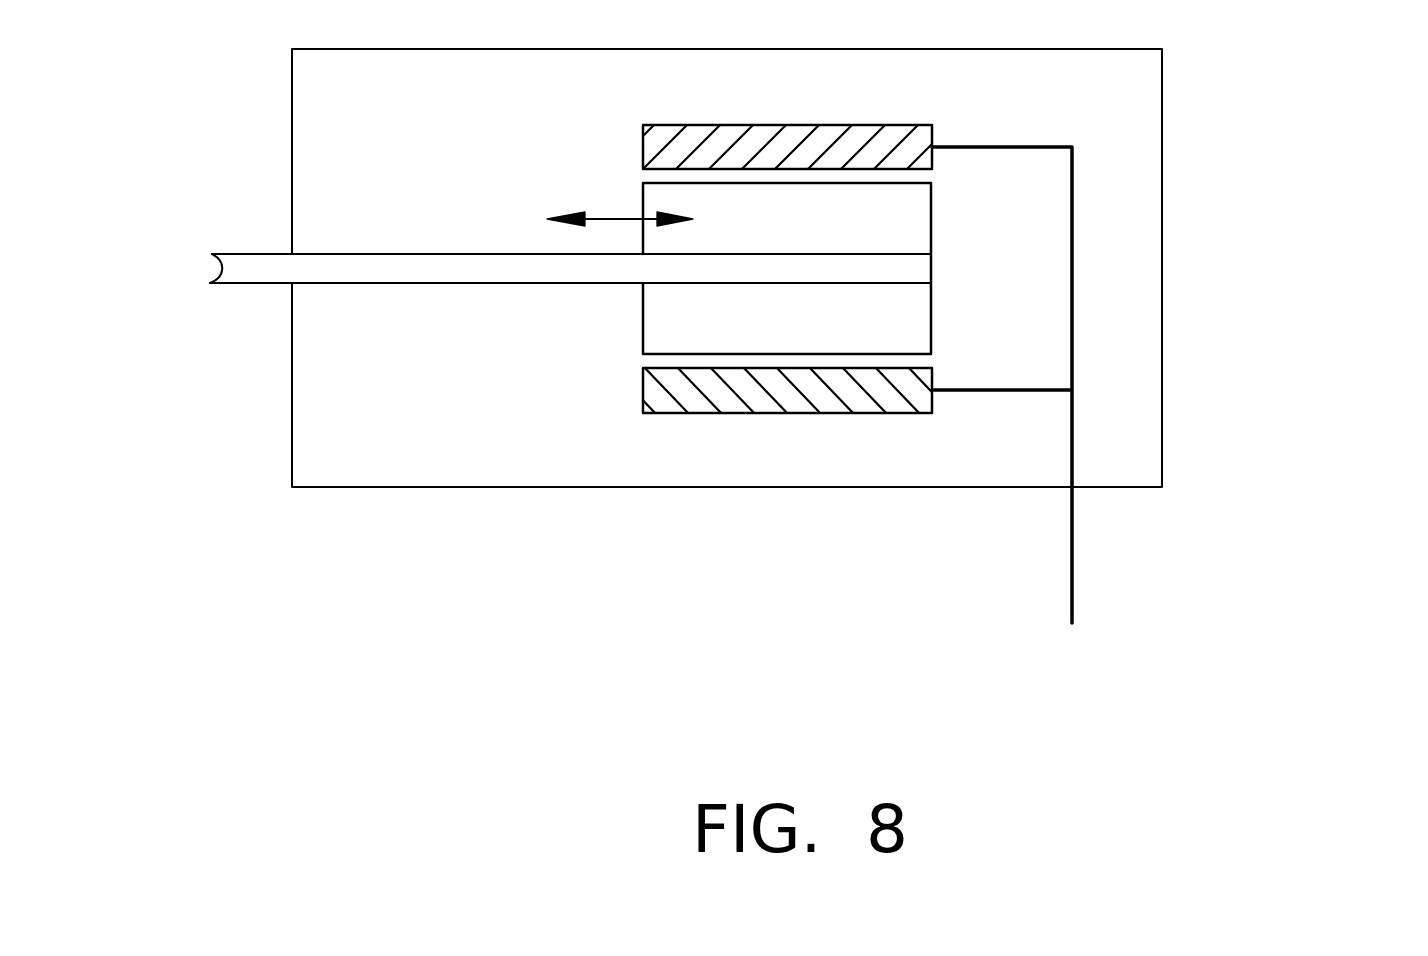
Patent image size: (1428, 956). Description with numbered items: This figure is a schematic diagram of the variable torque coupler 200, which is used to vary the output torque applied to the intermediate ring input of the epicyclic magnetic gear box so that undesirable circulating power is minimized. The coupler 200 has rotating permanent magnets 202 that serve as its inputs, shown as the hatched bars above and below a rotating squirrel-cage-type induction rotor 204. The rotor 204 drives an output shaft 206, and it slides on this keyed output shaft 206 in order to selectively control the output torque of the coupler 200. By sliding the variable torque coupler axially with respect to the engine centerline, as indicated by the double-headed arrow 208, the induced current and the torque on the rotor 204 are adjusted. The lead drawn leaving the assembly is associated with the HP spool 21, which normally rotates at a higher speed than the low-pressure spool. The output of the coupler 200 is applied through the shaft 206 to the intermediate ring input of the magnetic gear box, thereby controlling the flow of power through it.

The variable torque coupler 200 is at (1253, 196).
The rotating permanent magnets 202 is at (798, 125).
The squirrel-cage-type induction rotor 204 is at (610, 352).
The output shaft 206 is at (245, 287).
The arrow 208 is at (608, 216).
The HP spool 21 is at (1073, 573).